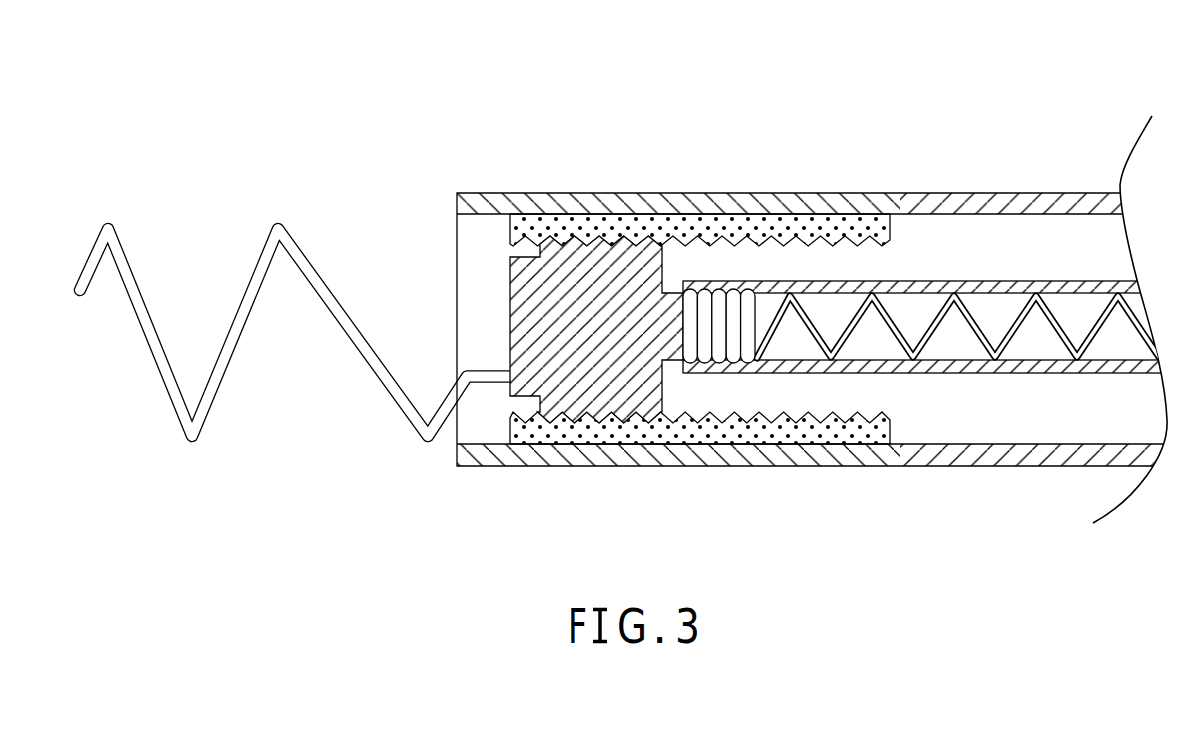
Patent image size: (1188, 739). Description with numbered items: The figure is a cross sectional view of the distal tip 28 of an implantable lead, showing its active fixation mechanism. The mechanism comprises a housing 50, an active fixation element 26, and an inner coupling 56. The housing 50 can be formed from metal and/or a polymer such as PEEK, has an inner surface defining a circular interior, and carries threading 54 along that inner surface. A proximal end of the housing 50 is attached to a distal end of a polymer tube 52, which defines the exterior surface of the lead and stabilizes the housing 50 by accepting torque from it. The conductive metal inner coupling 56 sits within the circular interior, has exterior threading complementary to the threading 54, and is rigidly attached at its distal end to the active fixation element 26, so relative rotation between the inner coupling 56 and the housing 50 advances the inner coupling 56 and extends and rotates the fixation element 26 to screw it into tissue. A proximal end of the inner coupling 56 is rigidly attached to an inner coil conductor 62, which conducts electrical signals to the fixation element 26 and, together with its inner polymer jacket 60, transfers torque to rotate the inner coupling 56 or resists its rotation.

The active fixation element 26 is at (192, 442).
The distal tip 28 is at (806, 96).
The housing 50 is at (633, 193).
The polymer tube 52 is at (990, 192).
The threading 54 is at (683, 220).
The inner coupling 56 is at (522, 388).
The inner polymer jacket 60 is at (1067, 373).
The inner coil conductor 62 is at (912, 363).